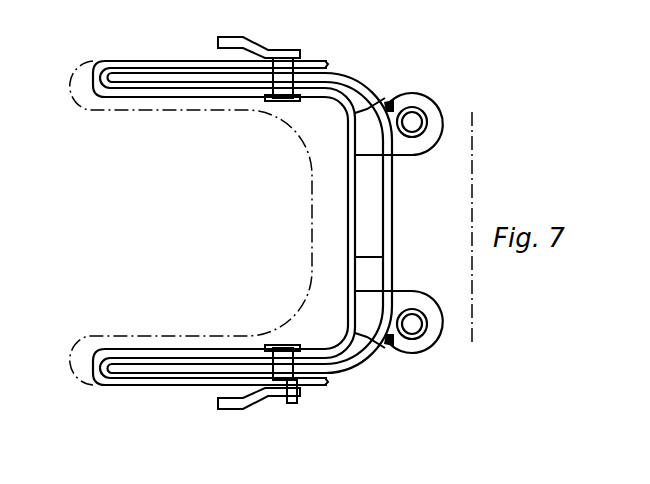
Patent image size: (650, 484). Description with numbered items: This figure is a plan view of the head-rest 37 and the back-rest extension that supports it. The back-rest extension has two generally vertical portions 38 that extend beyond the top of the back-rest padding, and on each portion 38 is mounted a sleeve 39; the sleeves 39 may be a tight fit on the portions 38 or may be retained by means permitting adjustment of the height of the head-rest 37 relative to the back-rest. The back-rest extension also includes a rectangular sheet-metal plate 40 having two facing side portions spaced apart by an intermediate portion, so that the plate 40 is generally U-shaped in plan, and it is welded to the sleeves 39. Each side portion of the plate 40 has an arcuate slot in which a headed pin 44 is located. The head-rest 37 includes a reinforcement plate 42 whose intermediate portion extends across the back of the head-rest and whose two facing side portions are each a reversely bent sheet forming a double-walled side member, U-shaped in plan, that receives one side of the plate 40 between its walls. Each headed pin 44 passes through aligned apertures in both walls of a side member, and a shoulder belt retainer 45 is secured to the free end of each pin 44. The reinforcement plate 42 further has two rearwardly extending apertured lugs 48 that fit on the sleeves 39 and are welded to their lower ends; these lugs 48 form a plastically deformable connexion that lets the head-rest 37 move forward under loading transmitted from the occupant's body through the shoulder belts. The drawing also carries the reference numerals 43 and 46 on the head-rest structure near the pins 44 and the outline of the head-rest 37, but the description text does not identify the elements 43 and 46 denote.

The head-rest 37 is at (195, 114).
The vertical portion 38 is at (412, 125).
The sleeve 39 is at (412, 107).
The sheet-metal plate 40 is at (392, 202).
The reinforcement plate 42 is at (385, 258).
The clip 43 is at (262, 363).
The headed pin 44 is at (297, 67).
The shoulder belt retainer 45 is at (237, 28).
The handle (phantom) 46 is at (128, 111).
The apertured lug 48 is at (407, 158).